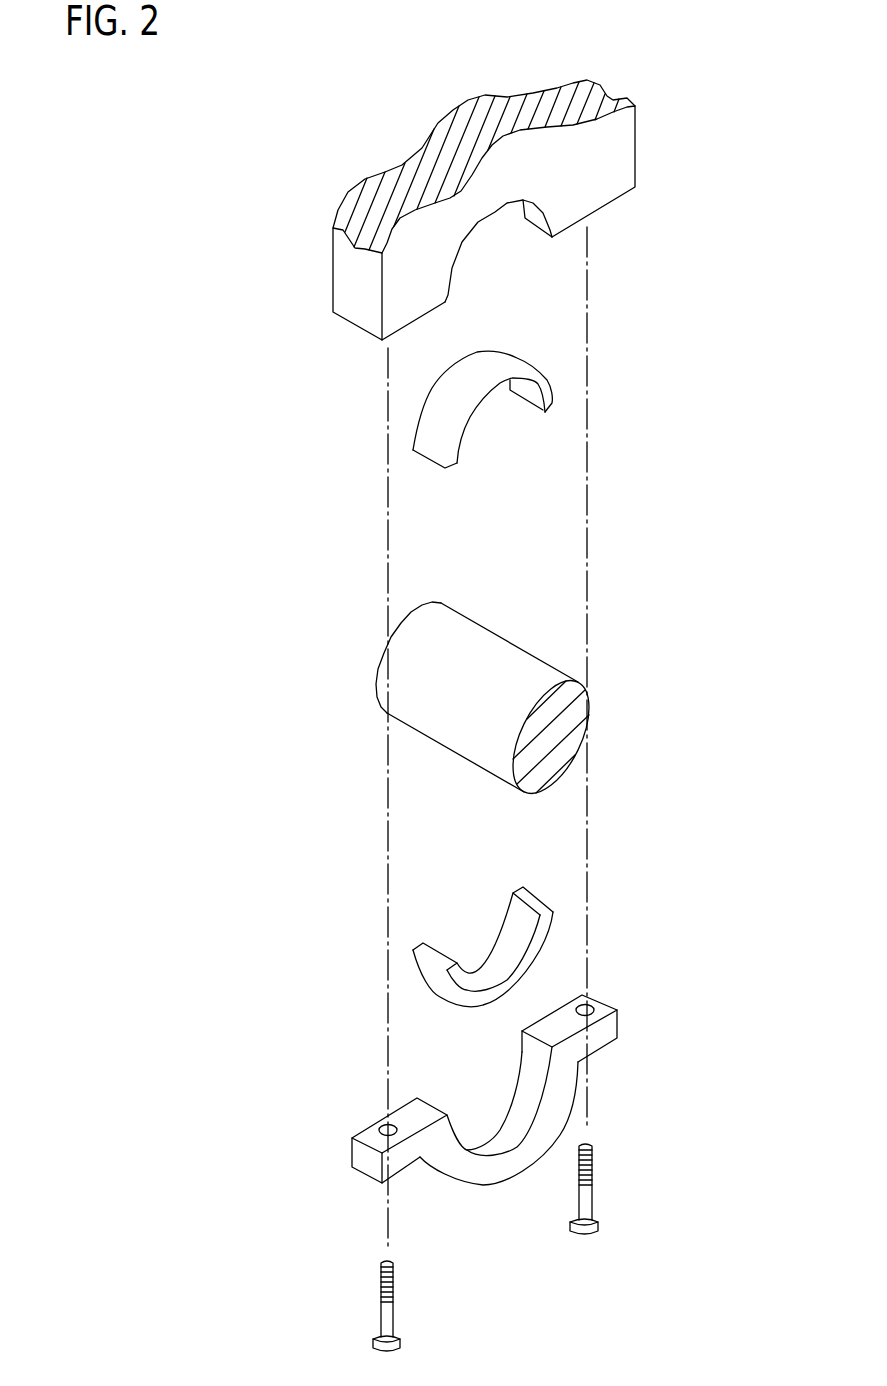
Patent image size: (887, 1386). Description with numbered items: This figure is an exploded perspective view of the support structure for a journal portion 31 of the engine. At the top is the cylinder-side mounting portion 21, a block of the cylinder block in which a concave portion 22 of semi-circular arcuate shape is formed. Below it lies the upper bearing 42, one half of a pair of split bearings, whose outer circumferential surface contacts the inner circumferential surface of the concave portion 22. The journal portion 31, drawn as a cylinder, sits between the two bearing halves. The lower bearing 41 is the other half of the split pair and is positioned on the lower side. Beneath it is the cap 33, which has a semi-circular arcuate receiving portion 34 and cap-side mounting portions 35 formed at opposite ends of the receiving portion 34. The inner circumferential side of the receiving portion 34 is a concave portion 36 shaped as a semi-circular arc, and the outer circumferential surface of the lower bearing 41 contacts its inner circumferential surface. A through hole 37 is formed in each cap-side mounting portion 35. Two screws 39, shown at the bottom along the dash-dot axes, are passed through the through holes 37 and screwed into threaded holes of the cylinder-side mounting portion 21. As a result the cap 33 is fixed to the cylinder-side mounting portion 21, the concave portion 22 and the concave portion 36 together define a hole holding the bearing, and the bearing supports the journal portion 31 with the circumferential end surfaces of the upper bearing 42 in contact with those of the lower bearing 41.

The cylinder-side mounting portion 21 is at (526, 210).
The concave portion 22 is at (540, 222).
The upper bearing 42 is at (493, 352).
The journal portion 31 is at (503, 648).
The lower bearing 41 is at (433, 957).
The cap 33 is at (512, 1100).
The receiving portion 34 is at (505, 1175).
The cap-side mounting portion 35 is at (597, 1040).
The concave portion 36 is at (523, 1100).
The through hole 37 is at (587, 1010).
The screw 39 is at (392, 1318).